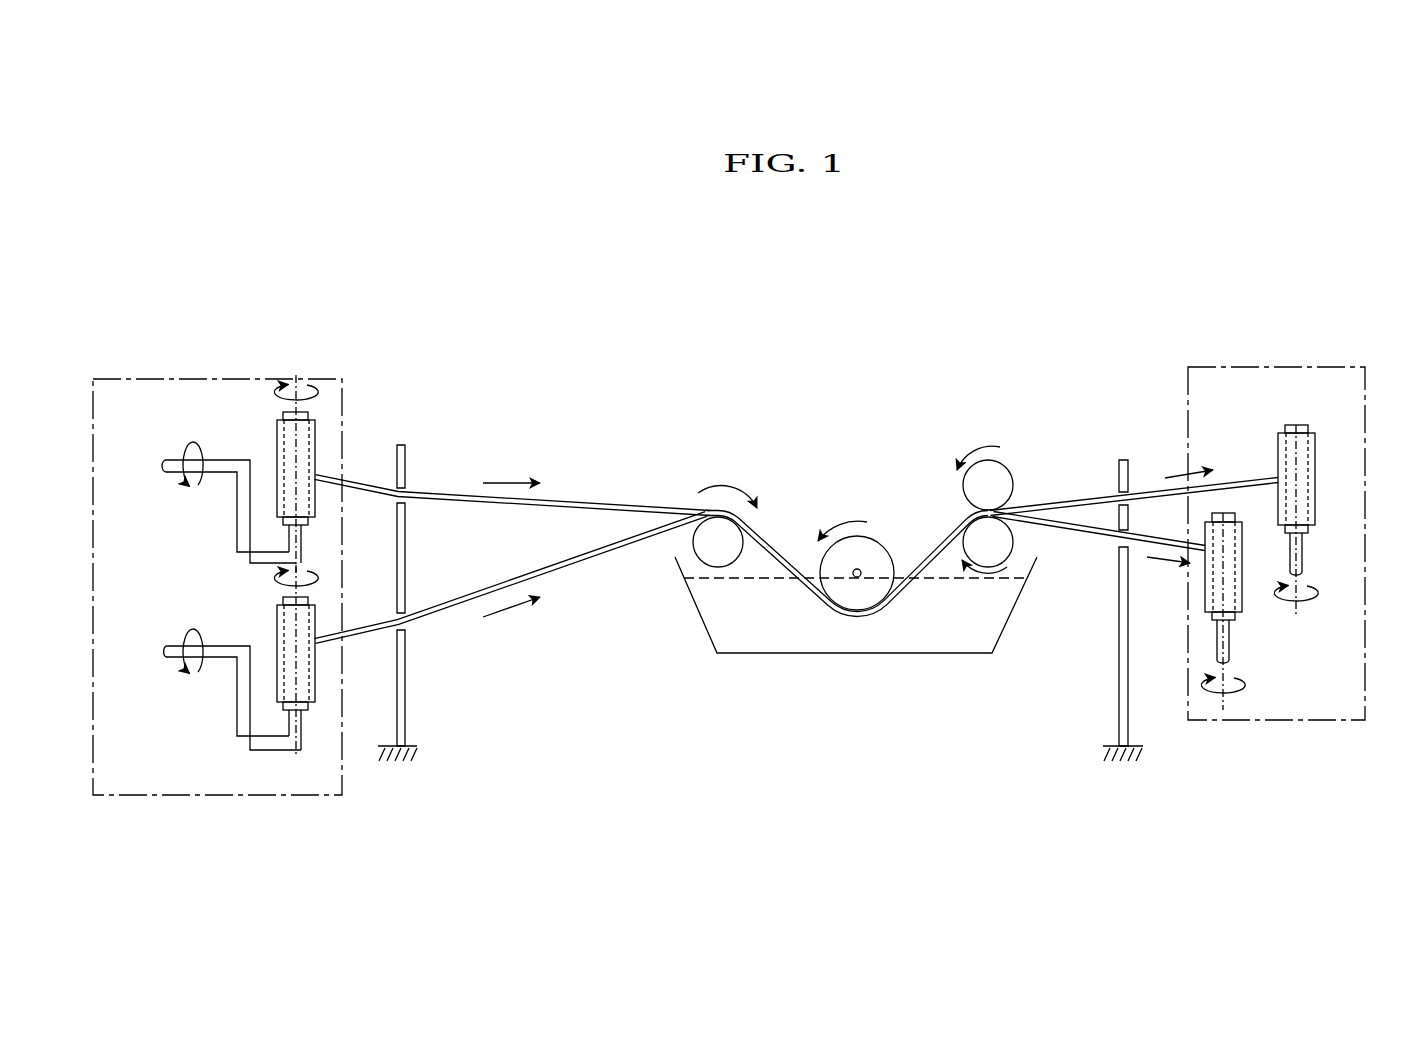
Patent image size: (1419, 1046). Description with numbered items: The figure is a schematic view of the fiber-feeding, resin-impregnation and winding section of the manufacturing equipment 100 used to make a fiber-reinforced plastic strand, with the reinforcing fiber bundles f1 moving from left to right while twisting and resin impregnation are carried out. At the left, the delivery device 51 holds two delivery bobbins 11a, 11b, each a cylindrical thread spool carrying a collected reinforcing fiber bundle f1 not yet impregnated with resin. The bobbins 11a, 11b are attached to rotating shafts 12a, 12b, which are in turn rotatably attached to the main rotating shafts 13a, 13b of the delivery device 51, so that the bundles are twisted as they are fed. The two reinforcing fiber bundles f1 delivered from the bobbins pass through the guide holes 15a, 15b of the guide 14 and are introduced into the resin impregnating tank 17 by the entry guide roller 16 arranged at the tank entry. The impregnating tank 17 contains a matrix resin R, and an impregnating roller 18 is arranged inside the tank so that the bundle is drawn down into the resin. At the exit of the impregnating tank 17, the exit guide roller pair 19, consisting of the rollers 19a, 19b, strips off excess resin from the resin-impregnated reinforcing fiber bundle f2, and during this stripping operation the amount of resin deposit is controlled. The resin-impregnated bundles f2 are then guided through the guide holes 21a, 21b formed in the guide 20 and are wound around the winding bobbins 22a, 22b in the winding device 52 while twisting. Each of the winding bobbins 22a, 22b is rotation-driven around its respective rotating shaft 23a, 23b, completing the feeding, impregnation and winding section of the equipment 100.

The manufacturing equipment 100 is at (857, 312).
The delivery device 51 is at (125, 379).
The winding device 52 is at (1318, 366).
The delivery bobbin 11a is at (313, 442).
The delivery bobbin 11b is at (312, 675).
The rotating shaft 12a is at (300, 542).
The rotating shaft 12b is at (310, 730).
The main rotating shaft 13a is at (223, 463).
The main rotating shaft 13b is at (223, 650).
The guide 14 is at (402, 447).
The guide hole 15a is at (412, 492).
The guide hole 15b is at (407, 627).
The reinforcing fiber bundle f1 is at (562, 507).
The entry guide roller 16 is at (710, 549).
The resin impregnating tank 17 is at (850, 655).
The matrix resin R is at (745, 636).
The impregnating roller 18 is at (870, 548).
The exit guide roller pair 19 is at (1015, 508).
The exit guide roller 19a is at (997, 483).
The exit guide roller 19b is at (998, 548).
The guide 20 is at (1123, 458).
The guide hole 21a is at (1130, 497).
The guide hole 21b is at (1142, 552).
The resin-impregnated reinforcing fiber bundle f2 is at (1093, 500).
The winding bobbin 22a is at (1310, 465).
The winding bobbin 22b is at (1238, 585).
The rotating shaft 23a is at (1300, 544).
The rotating shaft 23b is at (1228, 637).